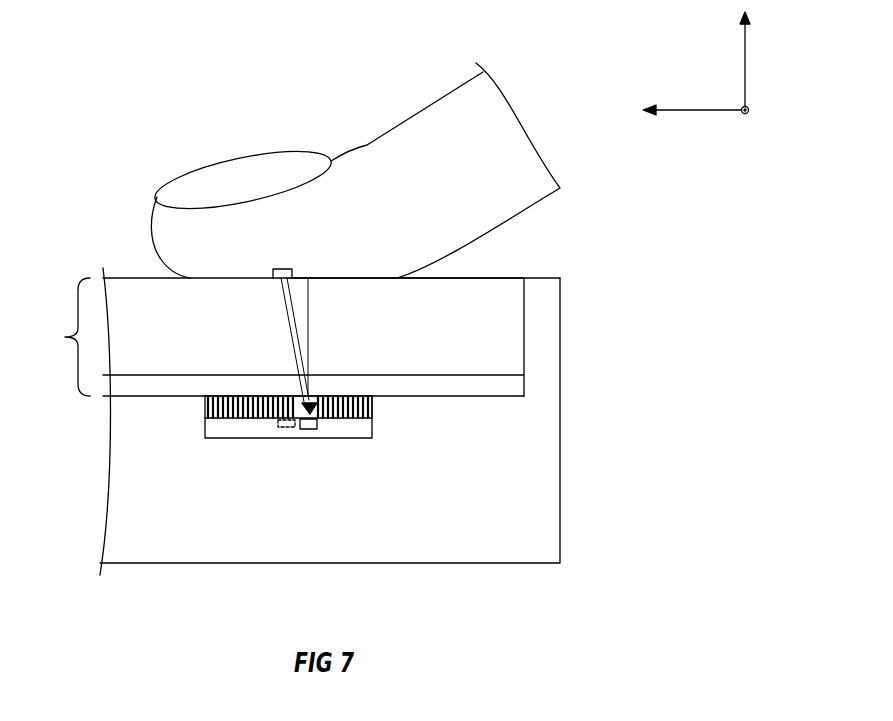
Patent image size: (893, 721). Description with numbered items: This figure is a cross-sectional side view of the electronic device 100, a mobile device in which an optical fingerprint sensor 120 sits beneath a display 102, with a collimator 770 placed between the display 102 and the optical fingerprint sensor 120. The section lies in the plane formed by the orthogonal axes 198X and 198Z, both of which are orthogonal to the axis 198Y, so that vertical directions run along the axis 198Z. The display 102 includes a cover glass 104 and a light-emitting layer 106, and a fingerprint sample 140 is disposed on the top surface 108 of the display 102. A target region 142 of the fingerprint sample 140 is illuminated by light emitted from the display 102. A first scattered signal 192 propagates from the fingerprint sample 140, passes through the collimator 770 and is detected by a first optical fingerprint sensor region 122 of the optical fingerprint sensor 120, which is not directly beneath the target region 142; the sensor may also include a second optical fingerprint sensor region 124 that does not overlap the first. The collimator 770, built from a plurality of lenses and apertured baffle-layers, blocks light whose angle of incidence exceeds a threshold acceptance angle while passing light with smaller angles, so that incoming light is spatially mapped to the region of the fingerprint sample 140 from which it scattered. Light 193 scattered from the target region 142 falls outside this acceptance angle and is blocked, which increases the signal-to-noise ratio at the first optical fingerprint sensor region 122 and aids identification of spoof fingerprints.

The electronic device 100 is at (613, 327).
The display 102 is at (54, 337).
The cover glass 104 is at (130, 290).
The light-emitting layer 106 is at (512, 386).
The top surface 108 is at (498, 278).
The optical fingerprint sensor 120 is at (228, 438).
The first optical fingerprint sensor region 122 is at (313, 438).
The second optical fingerprint sensor region 124 is at (287, 438).
The fingerprint sample 140 is at (252, 251).
The target region 142 is at (287, 269).
The first scattered signal 192 is at (313, 317).
The light scattered from the target region 193 is at (288, 334).
The collimator 770 is at (372, 403).
The axis 198X is at (692, 109).
The axis 198Y is at (740, 108).
The axis 198Z is at (746, 59).